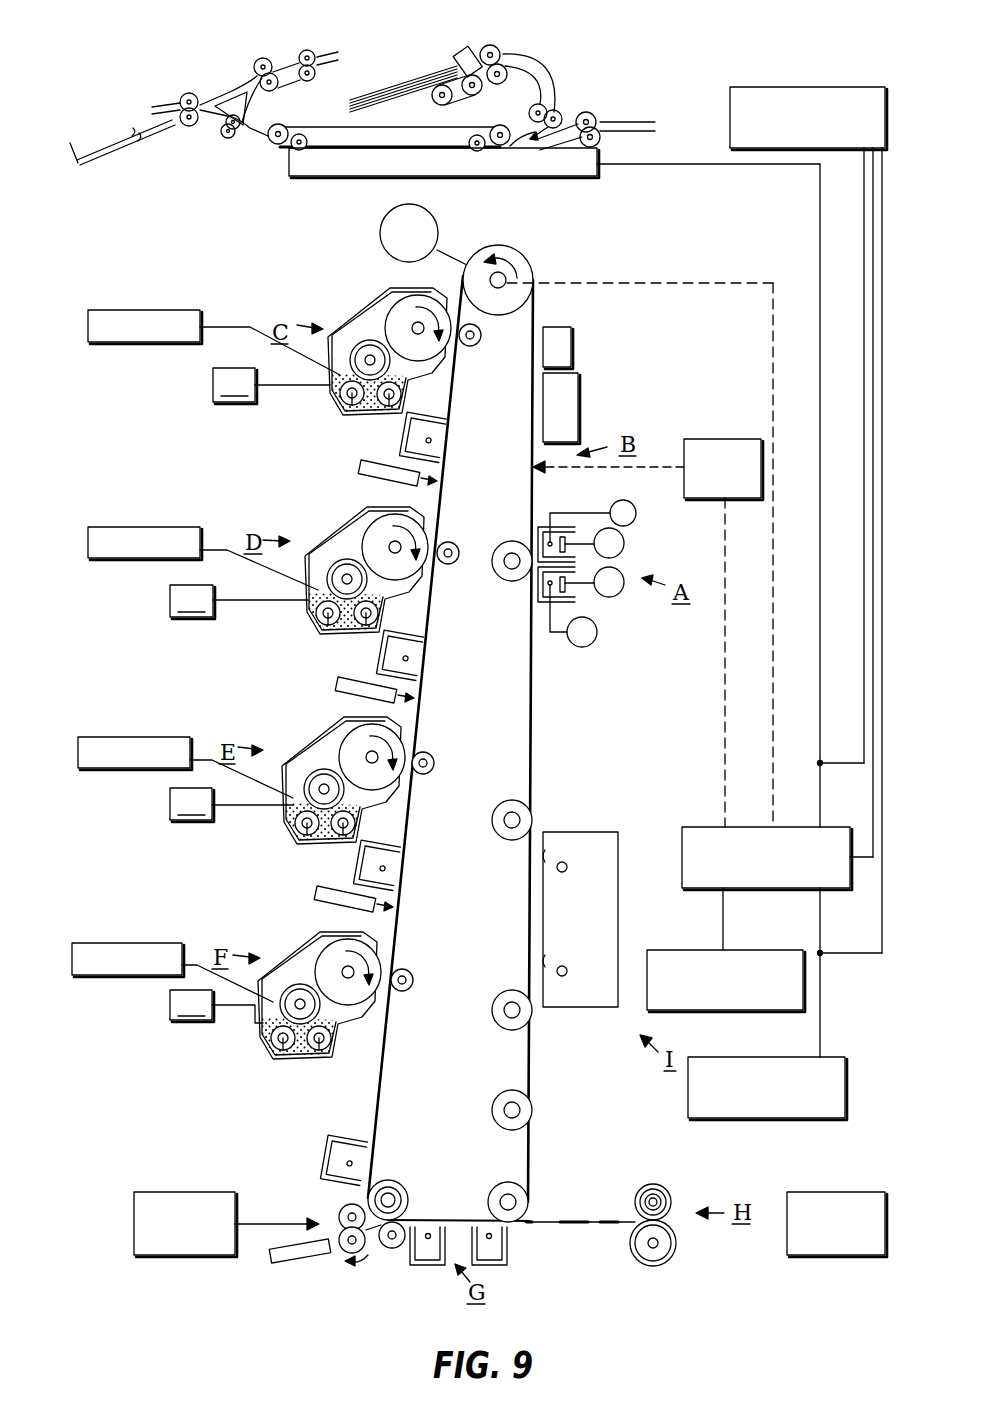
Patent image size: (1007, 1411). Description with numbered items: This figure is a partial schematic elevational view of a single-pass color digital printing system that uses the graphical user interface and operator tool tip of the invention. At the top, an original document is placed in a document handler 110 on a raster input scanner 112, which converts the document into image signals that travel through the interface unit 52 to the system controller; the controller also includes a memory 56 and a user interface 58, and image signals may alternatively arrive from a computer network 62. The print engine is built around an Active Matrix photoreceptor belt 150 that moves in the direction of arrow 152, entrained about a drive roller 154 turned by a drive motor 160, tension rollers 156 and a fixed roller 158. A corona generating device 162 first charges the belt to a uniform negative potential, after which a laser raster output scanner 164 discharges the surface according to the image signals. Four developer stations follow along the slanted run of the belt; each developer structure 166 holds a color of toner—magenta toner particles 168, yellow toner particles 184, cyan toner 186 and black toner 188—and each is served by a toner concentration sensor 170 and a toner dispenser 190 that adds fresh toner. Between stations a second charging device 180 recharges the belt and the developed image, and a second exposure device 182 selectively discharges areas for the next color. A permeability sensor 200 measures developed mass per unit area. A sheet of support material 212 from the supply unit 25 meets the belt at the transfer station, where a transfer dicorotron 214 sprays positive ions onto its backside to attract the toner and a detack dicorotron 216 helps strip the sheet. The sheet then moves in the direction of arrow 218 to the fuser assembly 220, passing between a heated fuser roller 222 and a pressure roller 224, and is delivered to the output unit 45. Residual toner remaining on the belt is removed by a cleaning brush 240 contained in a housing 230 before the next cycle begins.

The document handler 110 is at (576, 55).
The raster input scanner 112 is at (295, 163).
The drive motor 160 is at (430, 222).
The drive roller 154 is at (518, 253).
The interface unit 52 is at (758, 88).
The toner dispenser 190 is at (142, 309).
The toner concentration sensor 170 is at (250, 695).
The magenta toner particles 168 is at (337, 390).
The developer structure 166 is at (340, 410).
The second charging device 180 is at (399, 440).
The second exposure device 182 is at (360, 470).
The raster output scanner 164 is at (706, 440).
The corona generating device 162 is at (689, 569).
The yellow toner particles 184 is at (312, 606).
The cyan toner 186 is at (290, 818).
The black toner 188 is at (267, 1030).
The arrow 152 is at (517, 652).
The photoreceptor belt 150 is at (548, 716).
The housing 230 is at (575, 832).
The cleaning brush 240 is at (562, 977).
The memory 56 is at (696, 835).
The user interface 58 is at (673, 958).
The computer network 62 is at (748, 1118).
The permeability sensor 200 is at (332, 1178).
The supply unit 25 is at (160, 1192).
The tension rollers 156 is at (404, 1185).
The fixed roller 158 is at (494, 1190).
The sheet of support material 212 is at (275, 1262).
The transfer dicorotron 214 is at (425, 1268).
The detack dicorotron 216 is at (502, 1268).
The arrow 218 is at (602, 1210).
The fuser assembly 220 is at (665, 1151).
The fuser roller 222 is at (672, 1190).
The pressure roller 224 is at (662, 1263).
The output unit 45 is at (824, 1192).